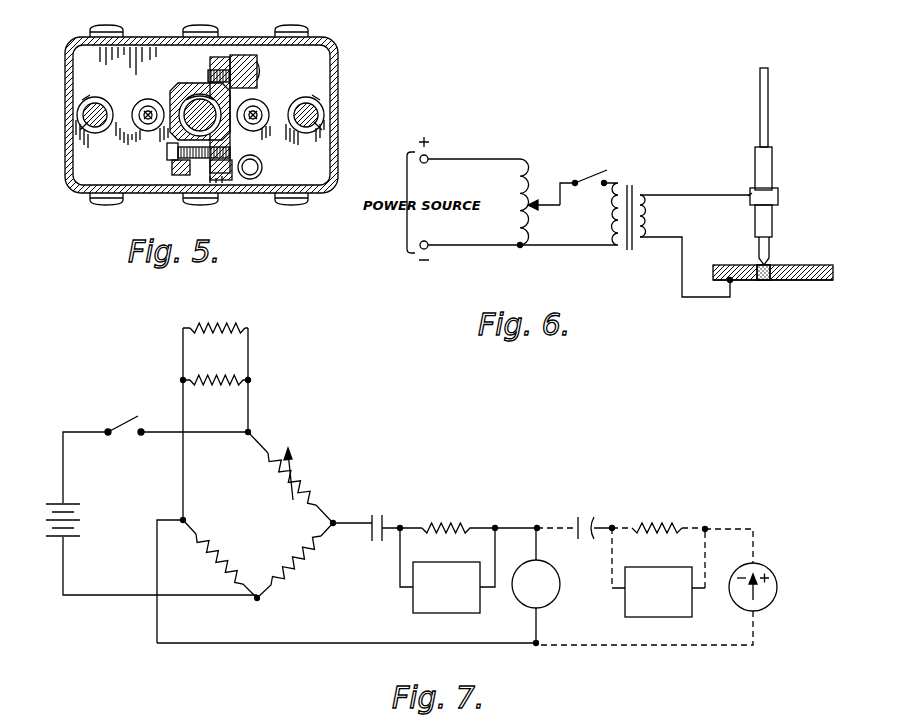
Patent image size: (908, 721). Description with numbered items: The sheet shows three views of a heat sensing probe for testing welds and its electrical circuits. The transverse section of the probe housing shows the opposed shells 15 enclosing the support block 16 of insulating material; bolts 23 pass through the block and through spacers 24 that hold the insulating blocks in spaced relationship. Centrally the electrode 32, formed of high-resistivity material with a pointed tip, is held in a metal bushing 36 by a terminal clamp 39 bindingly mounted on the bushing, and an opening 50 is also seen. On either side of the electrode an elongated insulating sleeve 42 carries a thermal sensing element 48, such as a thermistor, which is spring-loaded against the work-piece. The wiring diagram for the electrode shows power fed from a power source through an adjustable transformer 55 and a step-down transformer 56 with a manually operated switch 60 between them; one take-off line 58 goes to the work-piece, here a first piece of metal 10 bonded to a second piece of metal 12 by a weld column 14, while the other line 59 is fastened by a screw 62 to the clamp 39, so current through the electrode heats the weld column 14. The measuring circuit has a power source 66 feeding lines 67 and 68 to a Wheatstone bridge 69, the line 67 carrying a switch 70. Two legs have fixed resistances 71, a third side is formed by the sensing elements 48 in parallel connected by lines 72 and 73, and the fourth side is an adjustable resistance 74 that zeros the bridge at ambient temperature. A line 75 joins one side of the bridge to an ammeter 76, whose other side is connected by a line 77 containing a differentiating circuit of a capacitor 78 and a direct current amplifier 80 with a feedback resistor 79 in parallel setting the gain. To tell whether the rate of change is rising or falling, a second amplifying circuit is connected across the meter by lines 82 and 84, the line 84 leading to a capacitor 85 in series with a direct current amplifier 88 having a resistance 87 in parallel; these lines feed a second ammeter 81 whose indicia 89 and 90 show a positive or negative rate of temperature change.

In FIG. 6, the first piece of metal 10 is at (800, 265).
In FIG. 6, the second piece of metal 12 is at (797, 283).
In FIG. 6, the weld column 14 is at (765, 282).
In FIG. 5, the opposed shells 15 is at (328, 46).
In FIG. 5, the support block 16 is at (320, 78).
In FIG. 5, the bolts 23 is at (80, 112).
In FIG. 5, the spacers 24 is at (85, 128).
In FIG. 5, the electrode 32 is at (203, 100).
In FIG. 6, the electrode 32 is at (770, 251).
In FIG. 5, the metal bushing 36 is at (185, 105).
In FIG. 6, the metal bushing 36 is at (772, 176).
In FIG. 5, the terminal clamp 39 is at (222, 62).
In FIG. 6, the terminal clamp 39 is at (780, 197).
In FIG. 5, the elongated sleeve 42 is at (135, 104).
In FIG. 7, the thermal sensing element 48 is at (218, 328).
In FIG. 5, the opening 50 is at (262, 166).
In FIG. 6, the adjustable transformer 55 is at (527, 207).
In FIG. 6, the step-down transformer 56 is at (630, 183).
In FIG. 6, the line 58 is at (693, 298).
In FIG. 6, the line 59 is at (663, 193).
In FIG. 6, the manually operated switch 60 is at (588, 175).
In FIG. 5, the screw 62 is at (168, 158).
In FIG. 6, the screw 62 is at (750, 196).
In FIG. 7, the power source 66 is at (80, 519).
In FIG. 7, the line 67 is at (65, 478).
In FIG. 7, the line 68 is at (135, 598).
In FIG. 7, the Wheatstone bridge 69 is at (246, 537).
In FIG. 7, the switch 70 is at (122, 418).
In FIG. 7, the fixed resistances 71 is at (222, 565).
In FIG. 7, the line 72 is at (185, 486).
In FIG. 7, the line 73 is at (250, 413).
In FIG. 7, the adjustable resistance 74 is at (300, 479).
In FIG. 7, the line 75 is at (352, 643).
In FIG. 7, the ammeter 76 is at (553, 598).
In FIG. 7, the line 77 is at (513, 525).
In FIG. 7, the capacitor 78 is at (375, 513).
In FIG. 7, the feedback resistor 79 is at (457, 515).
In FIG. 7, the direct current amplifier 80 is at (413, 605).
In FIG. 7, the ammeter 81 is at (770, 603).
In FIG. 7, the line 82 is at (640, 645).
In FIG. 7, the line 84 is at (572, 526).
In FIG. 7, the capacitor 85 is at (590, 522).
In FIG. 7, the resistance 87 is at (650, 527).
In FIG. 7, the D.C. amplifier 88 is at (692, 608).
In FIG. 7, the indicia 89 is at (770, 572).
In FIG. 7, the indicia 90 is at (740, 570).